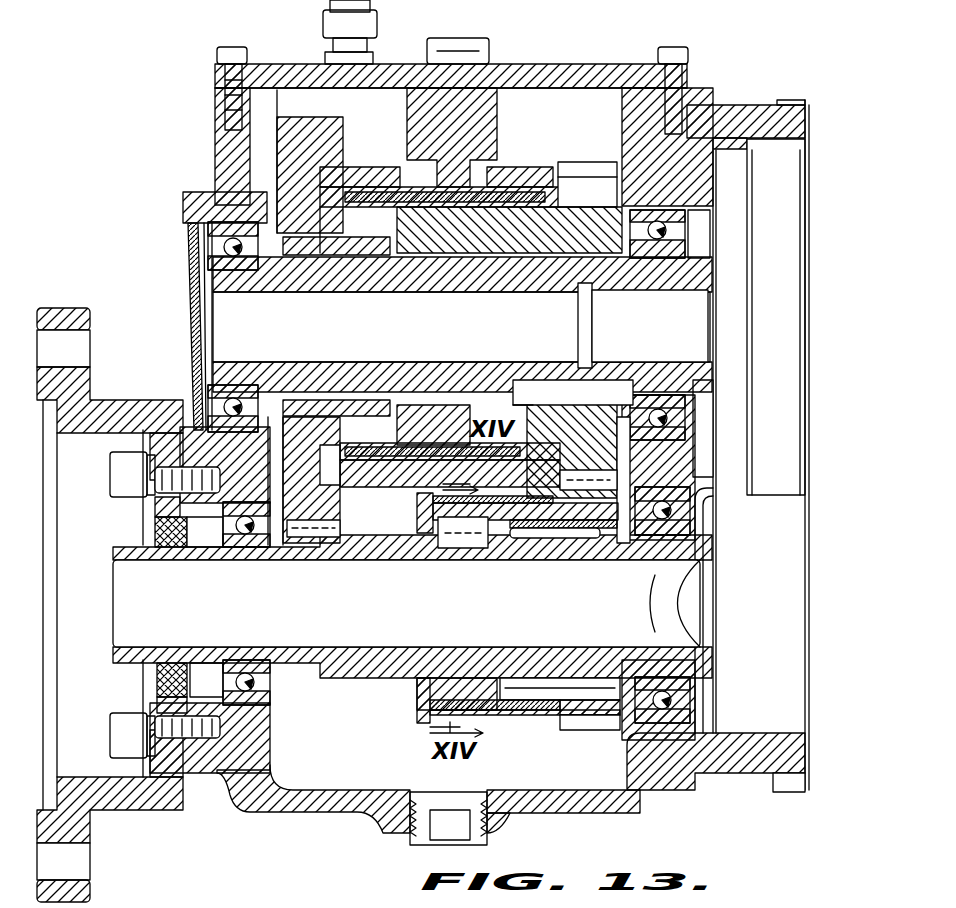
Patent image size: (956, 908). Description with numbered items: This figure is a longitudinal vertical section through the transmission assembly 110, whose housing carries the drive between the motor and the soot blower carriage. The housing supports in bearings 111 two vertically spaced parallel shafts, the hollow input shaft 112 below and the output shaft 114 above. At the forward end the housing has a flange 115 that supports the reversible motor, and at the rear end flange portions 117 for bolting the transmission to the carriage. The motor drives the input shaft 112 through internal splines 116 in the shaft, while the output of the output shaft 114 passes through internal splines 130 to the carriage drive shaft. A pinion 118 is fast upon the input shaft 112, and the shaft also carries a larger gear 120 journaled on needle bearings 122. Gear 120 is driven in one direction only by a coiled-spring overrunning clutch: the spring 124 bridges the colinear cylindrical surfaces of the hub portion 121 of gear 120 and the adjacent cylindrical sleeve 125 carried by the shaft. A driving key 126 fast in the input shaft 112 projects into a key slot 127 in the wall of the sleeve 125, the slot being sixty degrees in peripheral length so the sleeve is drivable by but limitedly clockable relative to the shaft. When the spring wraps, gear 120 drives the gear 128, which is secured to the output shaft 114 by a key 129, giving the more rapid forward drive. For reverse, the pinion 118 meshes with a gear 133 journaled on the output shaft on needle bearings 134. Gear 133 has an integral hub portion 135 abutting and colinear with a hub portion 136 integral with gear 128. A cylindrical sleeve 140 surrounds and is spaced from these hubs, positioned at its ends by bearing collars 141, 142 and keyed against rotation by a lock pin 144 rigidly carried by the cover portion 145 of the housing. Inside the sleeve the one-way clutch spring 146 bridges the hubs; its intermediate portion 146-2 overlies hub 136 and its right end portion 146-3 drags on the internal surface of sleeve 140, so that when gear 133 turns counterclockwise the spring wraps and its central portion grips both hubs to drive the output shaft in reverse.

The transmission assembly 110 is at (204, 152).
The bearings 111 is at (253, 685).
The input shaft 112 is at (200, 620).
The output shaft 114 is at (340, 283).
The flange 115 is at (78, 832).
The internal splines 116 is at (233, 563).
The flange portions 117 is at (787, 780).
The pinion 118 is at (355, 683).
The gear 120 is at (593, 723).
The hub portion 121 is at (543, 703).
The needle bearings 122 is at (550, 683).
The spring 124 is at (517, 707).
The cylindrical sleeve 125 is at (453, 687).
The driving key 126 is at (463, 540).
The key slot 127 is at (430, 523).
The gear 128 is at (587, 167).
The key 129 is at (540, 395).
The internal splines 130 is at (678, 290).
The gear 133 is at (285, 118).
The needle bearings 134 is at (330, 368).
The hub portion 135 is at (368, 430).
The hub portion 136 is at (410, 413).
The cylindrical sleeve 140 is at (365, 165).
The bearing collar 141 is at (357, 130).
The bearing collar 142 is at (547, 182).
The lock pin 144 is at (492, 112).
The cover portion 145 is at (575, 64).
The one-way clutch spring 146 is at (367, 205).
The intermediate portion 146-2 is at (457, 443).
The right end portion 146-3 is at (552, 393).